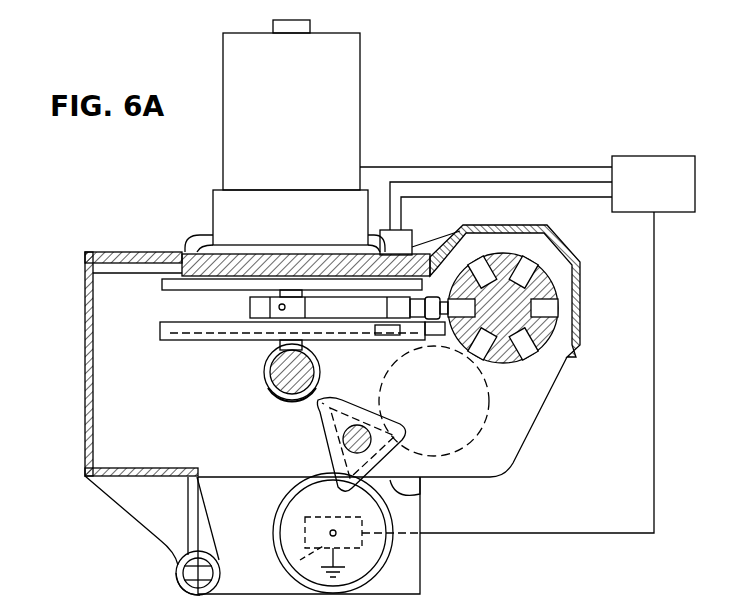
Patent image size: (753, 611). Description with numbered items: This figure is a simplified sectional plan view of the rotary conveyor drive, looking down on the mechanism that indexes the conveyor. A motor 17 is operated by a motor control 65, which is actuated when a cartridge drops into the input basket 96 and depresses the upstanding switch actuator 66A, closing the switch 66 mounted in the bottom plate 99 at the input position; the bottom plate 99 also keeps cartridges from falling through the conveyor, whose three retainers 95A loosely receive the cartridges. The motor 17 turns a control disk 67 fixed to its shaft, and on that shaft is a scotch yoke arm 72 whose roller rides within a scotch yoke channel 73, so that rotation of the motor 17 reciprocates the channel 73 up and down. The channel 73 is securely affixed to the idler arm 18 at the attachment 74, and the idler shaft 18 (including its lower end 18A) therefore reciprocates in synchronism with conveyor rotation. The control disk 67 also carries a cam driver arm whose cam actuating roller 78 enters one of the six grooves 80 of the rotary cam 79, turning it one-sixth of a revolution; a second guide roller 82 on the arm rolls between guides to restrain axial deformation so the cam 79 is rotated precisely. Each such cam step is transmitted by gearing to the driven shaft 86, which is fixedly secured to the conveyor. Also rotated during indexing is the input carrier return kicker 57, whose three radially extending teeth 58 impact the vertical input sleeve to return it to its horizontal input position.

The motor 17 is at (360, 118).
The motor control 65 is at (651, 156).
The control disk 67 is at (172, 288).
The scotch yoke channel 73 is at (192, 340).
The scotch yoke arm 72 is at (322, 312).
The attachment of scotch yoke channel to idler arm 74 is at (280, 345).
The second guide roller 82 is at (422, 300).
The cam actuating roller 78 is at (437, 335).
The rotary cam 79 is at (580, 281).
The grooves 80 is at (557, 311).
The idler shaft 18 is at (282, 374).
The cam disc periphery 18A is at (286, 398).
The teeth 58 is at (322, 410).
The driven shaft 86 is at (345, 445).
The input carrier return kicker 57 is at (378, 452).
The bottom plate 99 is at (421, 509).
The retainers 95A is at (287, 498).
The switch actuator 66A is at (330, 533).
The switch 66 is at (298, 564).
The input basket 96 is at (407, 572).